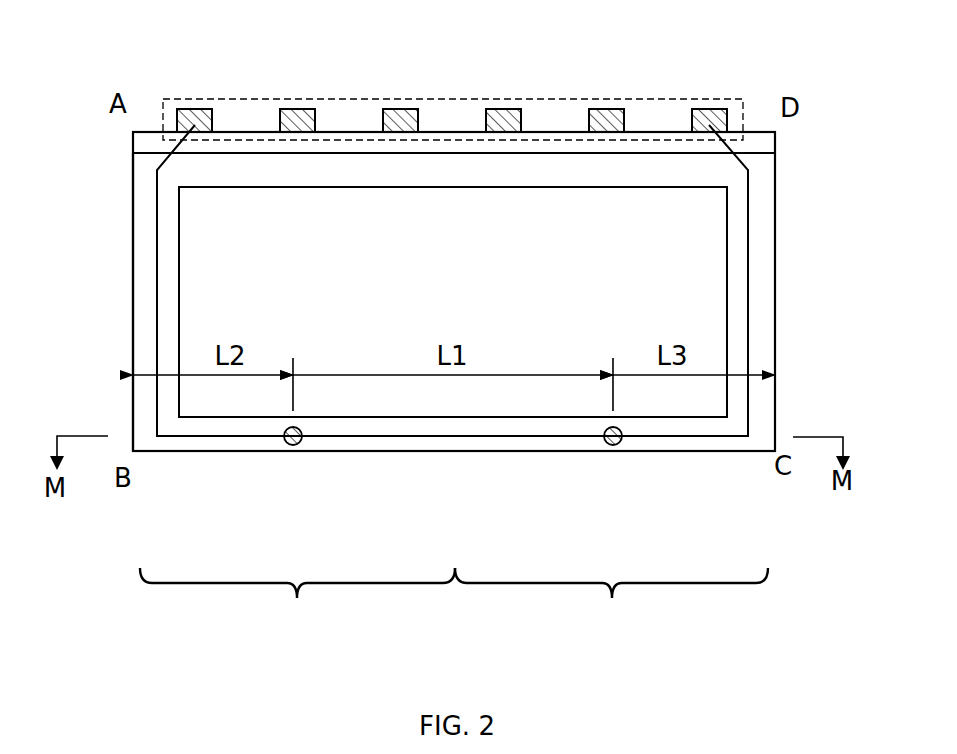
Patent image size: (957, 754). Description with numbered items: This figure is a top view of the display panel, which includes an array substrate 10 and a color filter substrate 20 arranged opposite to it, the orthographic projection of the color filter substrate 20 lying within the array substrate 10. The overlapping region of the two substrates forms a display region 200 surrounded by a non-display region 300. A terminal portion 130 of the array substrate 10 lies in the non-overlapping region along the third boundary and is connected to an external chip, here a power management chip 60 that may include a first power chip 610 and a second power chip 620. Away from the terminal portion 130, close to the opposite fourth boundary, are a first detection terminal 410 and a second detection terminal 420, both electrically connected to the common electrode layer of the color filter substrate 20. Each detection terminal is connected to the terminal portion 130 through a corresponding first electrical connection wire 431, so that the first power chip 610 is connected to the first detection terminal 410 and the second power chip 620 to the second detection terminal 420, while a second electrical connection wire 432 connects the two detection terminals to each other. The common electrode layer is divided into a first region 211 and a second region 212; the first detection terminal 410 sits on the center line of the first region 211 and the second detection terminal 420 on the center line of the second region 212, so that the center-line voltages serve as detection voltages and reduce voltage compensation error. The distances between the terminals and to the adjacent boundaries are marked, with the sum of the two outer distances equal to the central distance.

The array substrate 10 is at (132, 143).
The color filter substrate 20 is at (132, 253).
The power management chip 60 is at (452, 98).
The terminal portion 130 is at (753, 146).
The display region 200 is at (688, 268).
The non-display region 300 is at (762, 335).
The first power chip 610 is at (195, 125).
The second power chip 620 is at (709, 125).
The first detection terminal 410 is at (295, 446).
The second detection terminal 420 is at (613, 446).
The first electrical connection wires 431 is at (190, 437).
The second electrical connection wire 432 is at (450, 437).
The first region 211 is at (297, 602).
The second region 212 is at (611, 602).